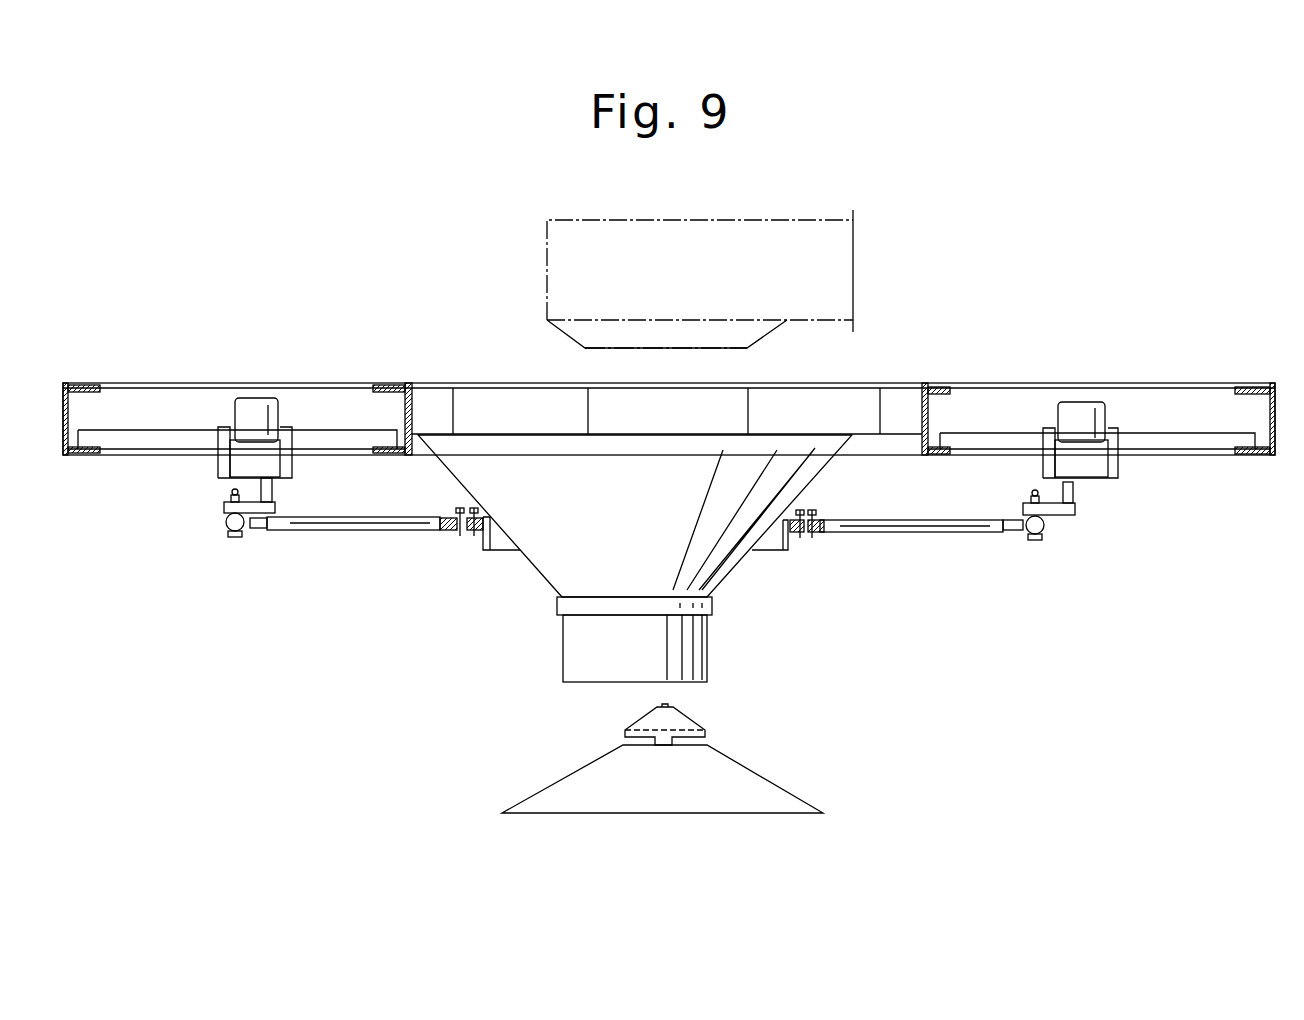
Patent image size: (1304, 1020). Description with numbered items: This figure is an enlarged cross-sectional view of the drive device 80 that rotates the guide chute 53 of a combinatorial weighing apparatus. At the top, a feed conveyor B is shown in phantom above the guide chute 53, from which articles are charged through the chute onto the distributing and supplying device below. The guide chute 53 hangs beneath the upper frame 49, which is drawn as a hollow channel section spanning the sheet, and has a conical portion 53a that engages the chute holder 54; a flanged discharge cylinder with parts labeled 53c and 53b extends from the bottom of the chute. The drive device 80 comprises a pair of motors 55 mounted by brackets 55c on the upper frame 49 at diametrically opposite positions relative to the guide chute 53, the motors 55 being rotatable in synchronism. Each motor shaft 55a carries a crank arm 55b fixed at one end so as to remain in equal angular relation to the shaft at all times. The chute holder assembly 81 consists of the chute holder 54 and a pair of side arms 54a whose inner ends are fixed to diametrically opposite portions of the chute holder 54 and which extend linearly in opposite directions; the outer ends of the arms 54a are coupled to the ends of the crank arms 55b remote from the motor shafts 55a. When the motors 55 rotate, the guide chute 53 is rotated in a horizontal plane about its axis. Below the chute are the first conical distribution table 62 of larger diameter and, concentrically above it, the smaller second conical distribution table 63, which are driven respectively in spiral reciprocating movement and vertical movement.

The upper frame 49 is at (1172, 384).
The motor 55 is at (280, 412).
The motor shaft 55a is at (274, 495).
The crank arm 55b is at (224, 507).
The bracket 55c is at (220, 467).
The chute holder 54 is at (500, 543).
The side arm 54a is at (343, 532).
The guide chute 53 is at (540, 577).
The conical portion 53a is at (720, 579).
The hopper discharge cylinder 53b is at (705, 655).
The hopper flange 53c is at (713, 608).
The second conical distribution table 63 is at (683, 720).
The first conical distribution table 62 is at (748, 784).
The chute holder assembly 81 is at (407, 540).
The drive device 80 is at (1057, 565).
The feed conveyor B is at (553, 292).